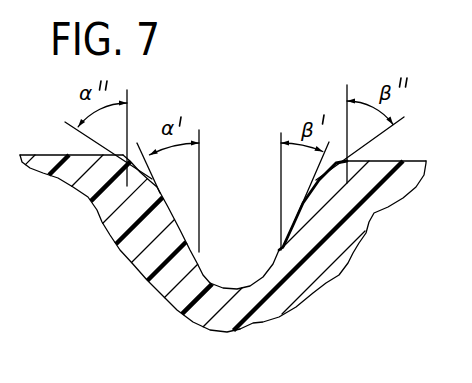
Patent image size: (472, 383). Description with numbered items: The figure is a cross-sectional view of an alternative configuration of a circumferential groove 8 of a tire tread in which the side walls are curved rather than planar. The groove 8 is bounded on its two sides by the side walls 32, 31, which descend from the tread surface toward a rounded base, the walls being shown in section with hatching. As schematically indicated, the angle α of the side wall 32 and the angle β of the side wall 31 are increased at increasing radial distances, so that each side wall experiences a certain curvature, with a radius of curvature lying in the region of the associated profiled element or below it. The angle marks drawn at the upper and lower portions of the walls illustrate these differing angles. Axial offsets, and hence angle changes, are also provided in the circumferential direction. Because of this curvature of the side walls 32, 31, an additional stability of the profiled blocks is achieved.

The groove 8 is at (256, 286).
The side wall 31 is at (287, 236).
The side wall 32 is at (185, 233).